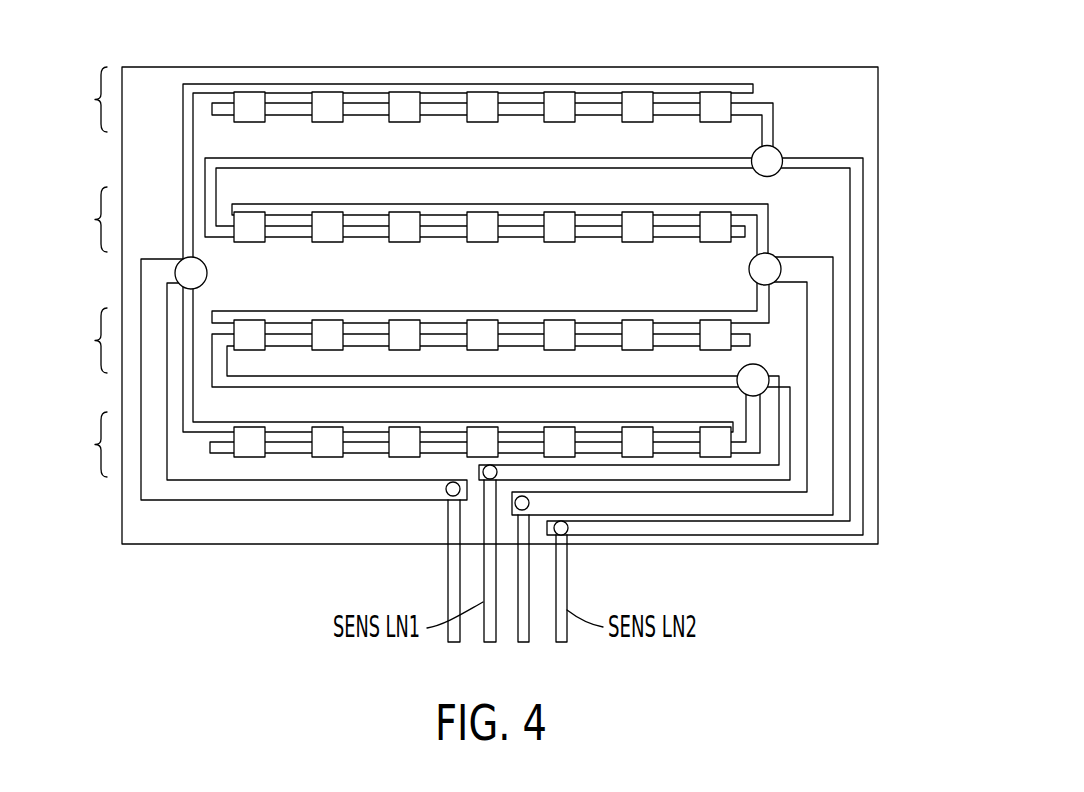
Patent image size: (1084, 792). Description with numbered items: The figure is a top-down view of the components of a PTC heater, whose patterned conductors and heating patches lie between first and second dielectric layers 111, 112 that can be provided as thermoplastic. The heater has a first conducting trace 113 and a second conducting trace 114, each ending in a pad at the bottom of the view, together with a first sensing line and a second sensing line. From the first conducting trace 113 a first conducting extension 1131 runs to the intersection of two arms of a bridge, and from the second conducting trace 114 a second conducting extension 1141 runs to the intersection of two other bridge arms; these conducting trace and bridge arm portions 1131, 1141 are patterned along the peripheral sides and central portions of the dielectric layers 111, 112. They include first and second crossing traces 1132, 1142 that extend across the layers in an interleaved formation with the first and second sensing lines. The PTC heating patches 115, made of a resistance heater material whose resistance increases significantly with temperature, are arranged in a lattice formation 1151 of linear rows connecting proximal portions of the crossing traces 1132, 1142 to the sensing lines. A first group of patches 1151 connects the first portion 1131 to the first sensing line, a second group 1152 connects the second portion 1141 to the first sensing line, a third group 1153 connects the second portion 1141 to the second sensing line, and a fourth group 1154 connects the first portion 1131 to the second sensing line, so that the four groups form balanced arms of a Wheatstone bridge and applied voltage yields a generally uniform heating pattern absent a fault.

The first dielectric layer 111 is at (500, 273).
The second dielectric layer 112 is at (242, 67).
The first conducting trace 113 is at (448, 572).
The second conducting trace 114 is at (532, 562).
The PTC heating patches 115 is at (474, 91).
The first conducting extension 1131 is at (152, 300).
The first crossing trace 1132 is at (295, 88).
The second conducting extension 1141 is at (813, 297).
The second crossing trace 1142 is at (687, 108).
The first group of PTC heating patches 1151 is at (415, 289).
The second group of PTC heating patches 1152 is at (81, 219).
The third group of PTC heating patches 1153 is at (81, 340).
The fourth group of PTC heating patches 1154 is at (81, 444).